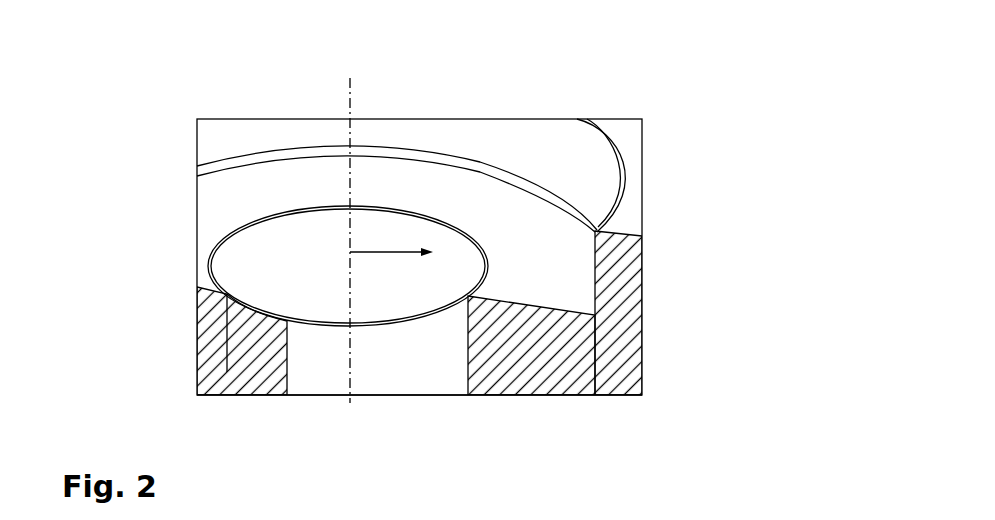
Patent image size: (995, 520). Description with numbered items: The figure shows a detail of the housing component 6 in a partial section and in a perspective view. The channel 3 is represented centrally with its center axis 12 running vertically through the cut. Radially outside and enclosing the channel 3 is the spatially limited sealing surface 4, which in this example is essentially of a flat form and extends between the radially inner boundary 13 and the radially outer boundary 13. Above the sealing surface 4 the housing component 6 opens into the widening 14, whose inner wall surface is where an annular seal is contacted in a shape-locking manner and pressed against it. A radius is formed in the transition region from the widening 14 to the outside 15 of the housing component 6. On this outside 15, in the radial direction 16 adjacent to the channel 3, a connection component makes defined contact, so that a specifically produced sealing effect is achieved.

The channel 3 is at (313, 380).
The sealing surface 4 is at (248, 203).
The housing component 6 is at (662, 94).
The center axis 12 is at (352, 105).
The radially inner and outer boundaries 13 is at (468, 298).
The widening 14 is at (210, 149).
The outside 15 is at (631, 213).
The radial direction 16 is at (413, 249).